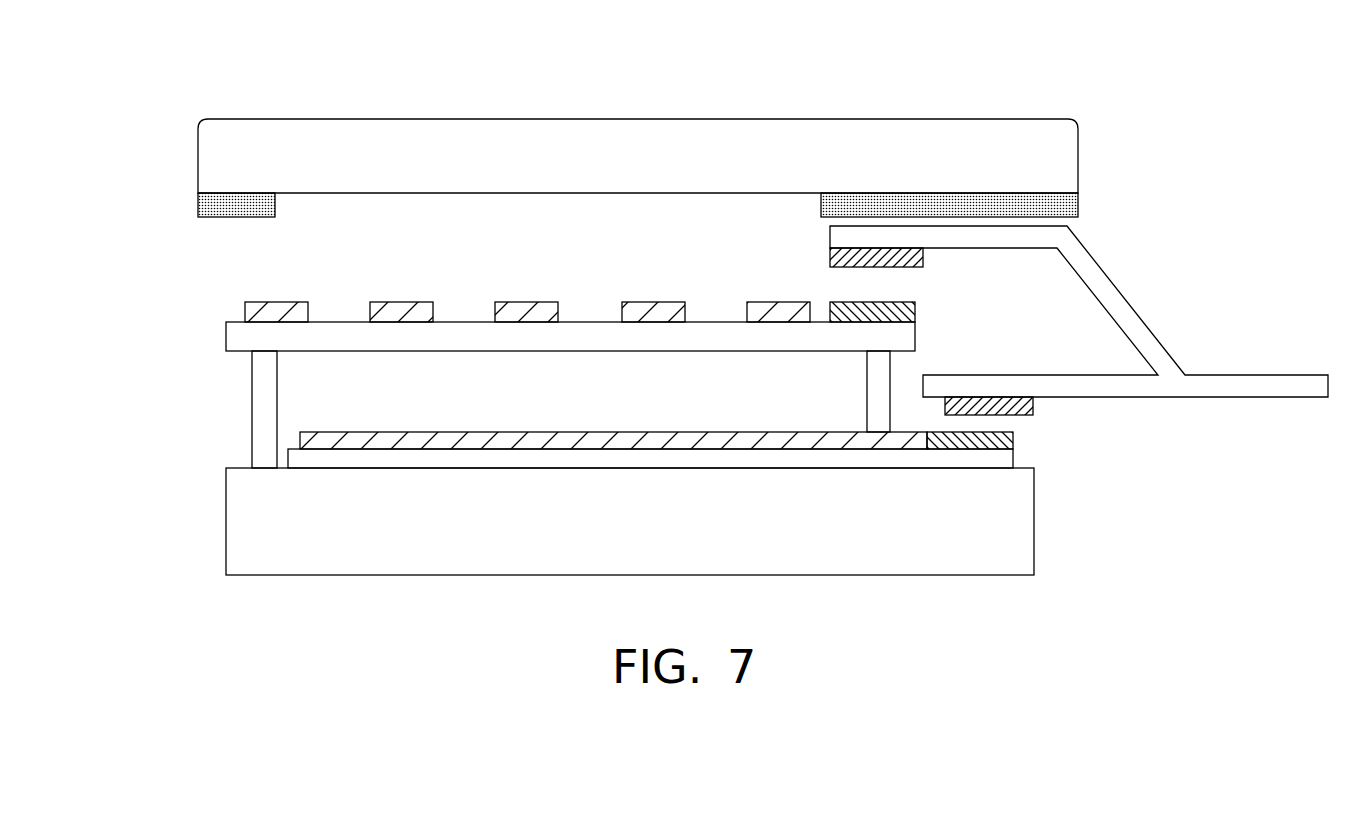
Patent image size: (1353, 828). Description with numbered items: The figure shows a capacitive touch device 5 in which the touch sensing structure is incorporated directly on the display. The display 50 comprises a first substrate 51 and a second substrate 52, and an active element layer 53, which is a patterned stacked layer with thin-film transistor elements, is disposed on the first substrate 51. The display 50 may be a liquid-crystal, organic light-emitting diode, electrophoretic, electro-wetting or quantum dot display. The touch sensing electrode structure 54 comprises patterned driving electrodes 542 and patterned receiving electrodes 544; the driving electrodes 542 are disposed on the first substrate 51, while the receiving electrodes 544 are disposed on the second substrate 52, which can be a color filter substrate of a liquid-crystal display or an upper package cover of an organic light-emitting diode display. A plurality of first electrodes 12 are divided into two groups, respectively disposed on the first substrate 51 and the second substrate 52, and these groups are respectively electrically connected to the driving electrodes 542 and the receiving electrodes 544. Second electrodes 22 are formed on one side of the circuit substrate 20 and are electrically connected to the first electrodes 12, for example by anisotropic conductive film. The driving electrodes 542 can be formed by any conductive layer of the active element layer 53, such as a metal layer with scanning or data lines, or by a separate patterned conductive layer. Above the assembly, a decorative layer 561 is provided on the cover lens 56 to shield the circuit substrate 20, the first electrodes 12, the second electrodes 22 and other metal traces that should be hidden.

The capacitive touch device 5 is at (1245, 264).
The first electrodes 12 is at (905, 310).
The circuit substrate 20 is at (1118, 305).
The second electrodes 22 is at (828, 260).
The display 50 is at (216, 322).
The first substrate 51 is at (1023, 522).
The second substrate 52 is at (590, 335).
The active element layer 53 is at (1003, 460).
The touch sensing electrode structure 54 is at (121, 235).
The patterned driving electrodes 542 is at (326, 432).
The patterned receiving electrodes 544 is at (278, 312).
The cover lens 56 is at (589, 130).
The decorative layer 561 is at (947, 205).